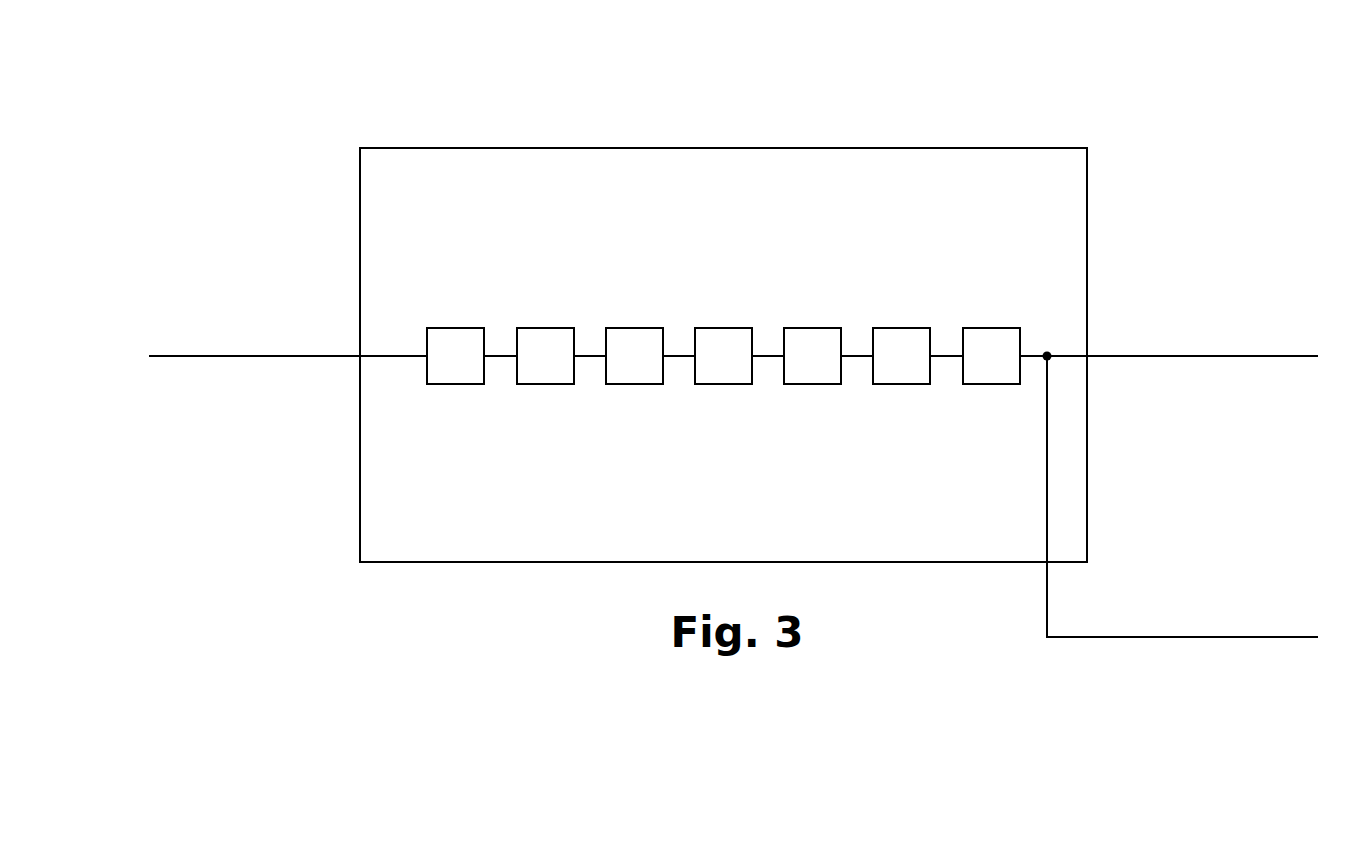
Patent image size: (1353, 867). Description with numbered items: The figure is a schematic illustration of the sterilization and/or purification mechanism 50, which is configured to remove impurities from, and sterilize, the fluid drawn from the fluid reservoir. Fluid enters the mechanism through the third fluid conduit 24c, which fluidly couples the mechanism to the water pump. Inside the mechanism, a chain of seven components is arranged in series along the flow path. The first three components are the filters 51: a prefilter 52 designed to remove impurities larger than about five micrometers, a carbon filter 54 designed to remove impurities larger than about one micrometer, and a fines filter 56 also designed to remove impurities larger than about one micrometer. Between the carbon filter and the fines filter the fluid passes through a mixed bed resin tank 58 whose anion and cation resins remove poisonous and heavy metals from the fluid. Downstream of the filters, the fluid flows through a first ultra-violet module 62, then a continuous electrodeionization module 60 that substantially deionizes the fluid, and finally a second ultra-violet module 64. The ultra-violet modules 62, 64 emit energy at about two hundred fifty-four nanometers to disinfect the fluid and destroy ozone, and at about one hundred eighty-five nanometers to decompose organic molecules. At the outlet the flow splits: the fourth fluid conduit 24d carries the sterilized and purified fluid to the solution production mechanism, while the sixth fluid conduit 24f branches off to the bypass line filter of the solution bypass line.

The sterilization and/or purification mechanism 50 is at (787, 114).
The filter 51 is at (708, 404).
The prefilter 52 is at (455, 345).
The carbon filter 54 is at (543, 345).
The fines filter 56 is at (721, 345).
The mixed bed resin tank 58 is at (632, 345).
The continuous electrodeionization module 60 is at (899, 345).
The ultra-violet module 62 is at (810, 345).
The ultra-violet module 64 is at (988, 345).
The third fluid conduit 24c is at (257, 402).
The fourth fluid conduit 24d is at (1188, 332).
The sixth fluid conduit 24f is at (1176, 663).